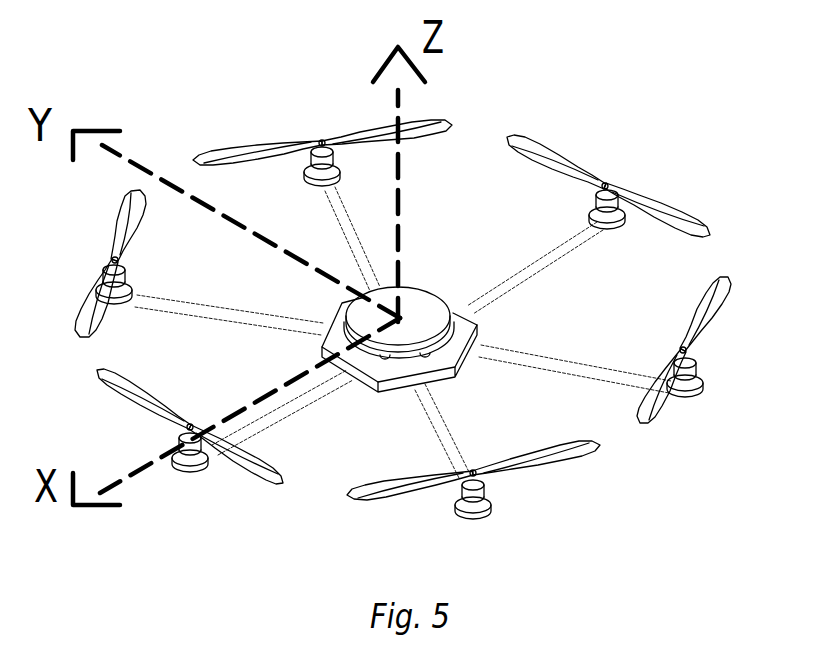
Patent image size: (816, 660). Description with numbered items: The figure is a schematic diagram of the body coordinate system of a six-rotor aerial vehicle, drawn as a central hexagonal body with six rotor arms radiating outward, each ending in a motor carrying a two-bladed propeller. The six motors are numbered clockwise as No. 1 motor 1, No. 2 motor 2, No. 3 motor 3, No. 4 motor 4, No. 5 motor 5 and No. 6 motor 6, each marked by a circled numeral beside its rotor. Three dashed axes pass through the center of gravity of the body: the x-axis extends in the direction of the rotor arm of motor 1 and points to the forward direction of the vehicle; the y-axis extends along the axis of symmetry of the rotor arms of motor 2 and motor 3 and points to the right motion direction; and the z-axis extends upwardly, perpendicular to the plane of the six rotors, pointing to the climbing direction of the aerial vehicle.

The No. 1 motor 1 is at (225, 426).
The No. 2 motor 2 is at (199, 263).
The No. 3 motor 3 is at (322, 185).
The No. 4 motor 4 is at (588, 220).
The No. 5 motor 5 is at (628, 350).
The No. 6 motor 6 is at (473, 451).